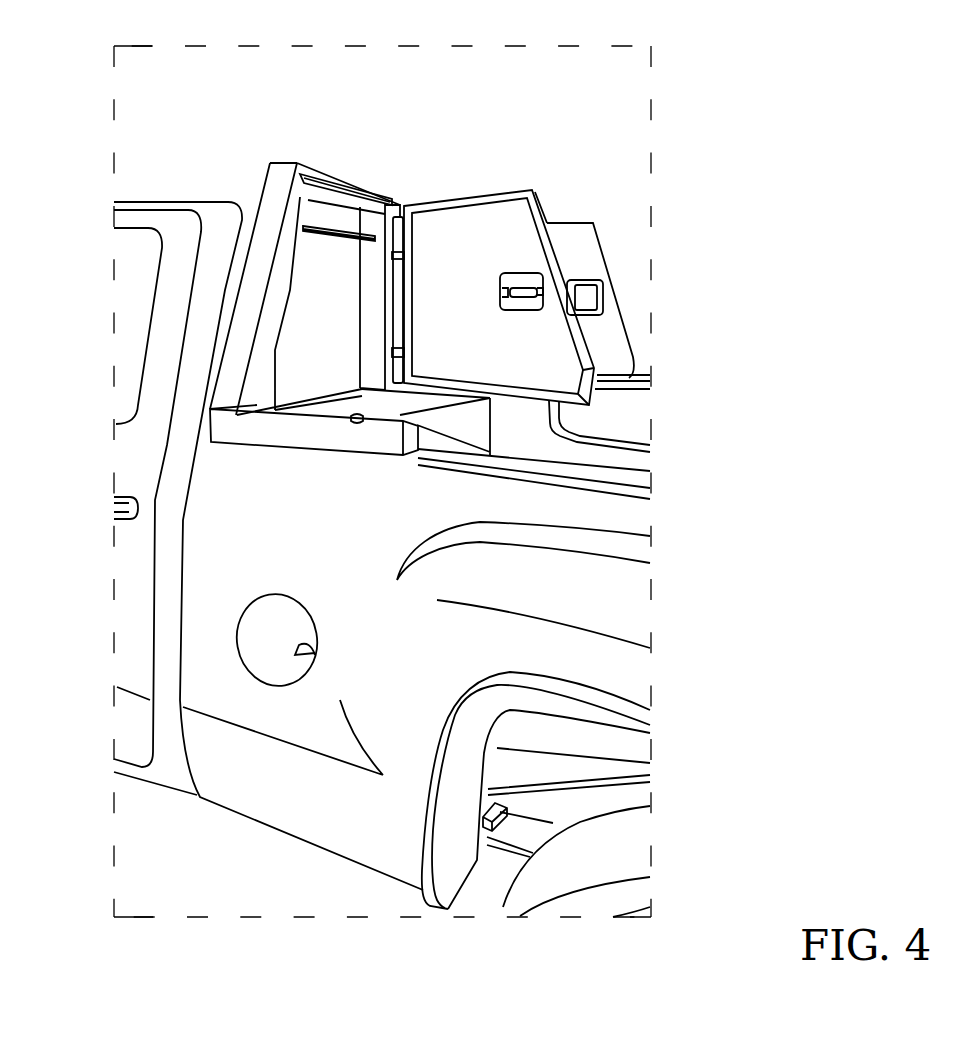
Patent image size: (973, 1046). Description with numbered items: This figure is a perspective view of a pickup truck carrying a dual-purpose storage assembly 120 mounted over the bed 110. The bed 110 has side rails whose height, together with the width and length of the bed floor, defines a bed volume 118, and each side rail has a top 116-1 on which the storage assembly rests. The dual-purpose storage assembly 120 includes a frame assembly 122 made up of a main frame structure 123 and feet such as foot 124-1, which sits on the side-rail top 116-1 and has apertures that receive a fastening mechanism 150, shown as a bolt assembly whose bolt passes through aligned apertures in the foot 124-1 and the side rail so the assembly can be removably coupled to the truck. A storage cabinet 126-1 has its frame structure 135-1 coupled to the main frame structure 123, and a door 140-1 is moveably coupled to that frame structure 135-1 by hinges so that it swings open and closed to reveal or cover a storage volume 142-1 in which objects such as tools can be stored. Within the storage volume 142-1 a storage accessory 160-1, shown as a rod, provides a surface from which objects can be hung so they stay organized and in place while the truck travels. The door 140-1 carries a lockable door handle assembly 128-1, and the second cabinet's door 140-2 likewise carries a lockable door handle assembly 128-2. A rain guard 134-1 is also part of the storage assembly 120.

The bed 110 is at (630, 624).
The top 116-1 is at (630, 477).
The bed volume 118 is at (620, 407).
The dual-purpose storage assembly 120 is at (373, 126).
The frame assembly 122 is at (302, 153).
The main frame structure 123 is at (401, 216).
The foot 124-1 is at (260, 425).
The storage cabinet 126-1 is at (228, 168).
The lockable door handle assembly 128-1 is at (530, 276).
The lockable door handle assembly 128-2 is at (600, 302).
The rain guard 134-1 is at (336, 172).
The frame structure 135-1 is at (395, 243).
The door 140-1 is at (543, 203).
The door 140-2 is at (585, 237).
The storage volume 142-1 is at (344, 360).
The fastening mechanism 150 is at (363, 396).
The storage accessory 160-1 is at (330, 225).